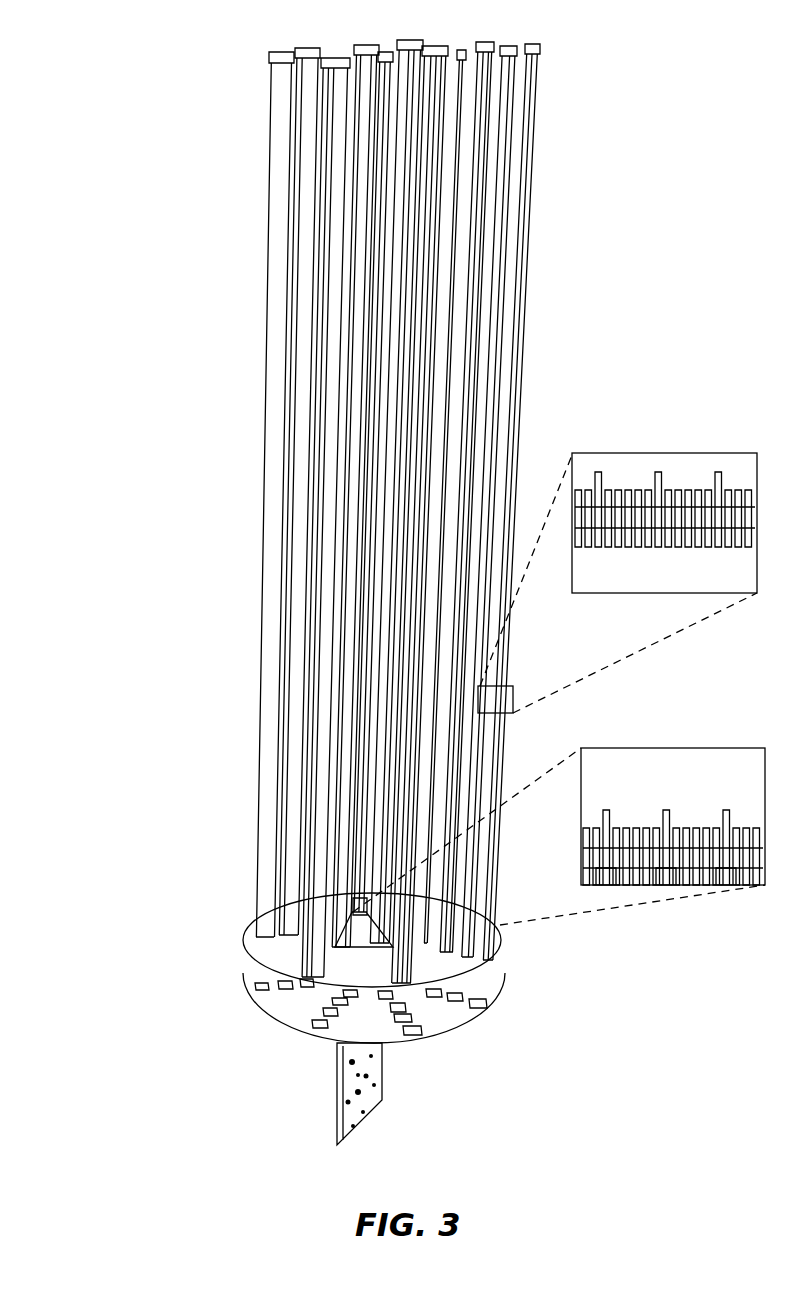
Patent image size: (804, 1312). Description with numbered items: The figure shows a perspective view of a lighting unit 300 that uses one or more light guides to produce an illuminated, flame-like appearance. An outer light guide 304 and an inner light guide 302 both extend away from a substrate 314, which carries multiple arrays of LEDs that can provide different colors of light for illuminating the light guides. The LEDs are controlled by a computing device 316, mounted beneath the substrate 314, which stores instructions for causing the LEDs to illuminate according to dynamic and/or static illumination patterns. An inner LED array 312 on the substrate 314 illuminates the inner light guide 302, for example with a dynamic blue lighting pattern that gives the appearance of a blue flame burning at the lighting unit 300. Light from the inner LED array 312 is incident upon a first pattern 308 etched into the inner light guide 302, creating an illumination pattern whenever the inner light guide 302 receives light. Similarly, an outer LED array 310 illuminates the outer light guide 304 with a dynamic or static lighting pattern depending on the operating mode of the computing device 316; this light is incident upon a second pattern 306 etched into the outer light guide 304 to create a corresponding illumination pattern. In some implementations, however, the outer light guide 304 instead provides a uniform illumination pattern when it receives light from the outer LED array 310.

The lighting unit 300 is at (114, 92).
The inner light guide 302 is at (498, 48).
The outer light guide 304 is at (270, 62).
The second pattern 306 is at (712, 543).
The first pattern 308 is at (698, 823).
The outer LED array 310 is at (310, 1015).
The inner LED array 312 is at (450, 1003).
The substrate 314 is at (437, 1042).
The computing device 316 is at (372, 1112).